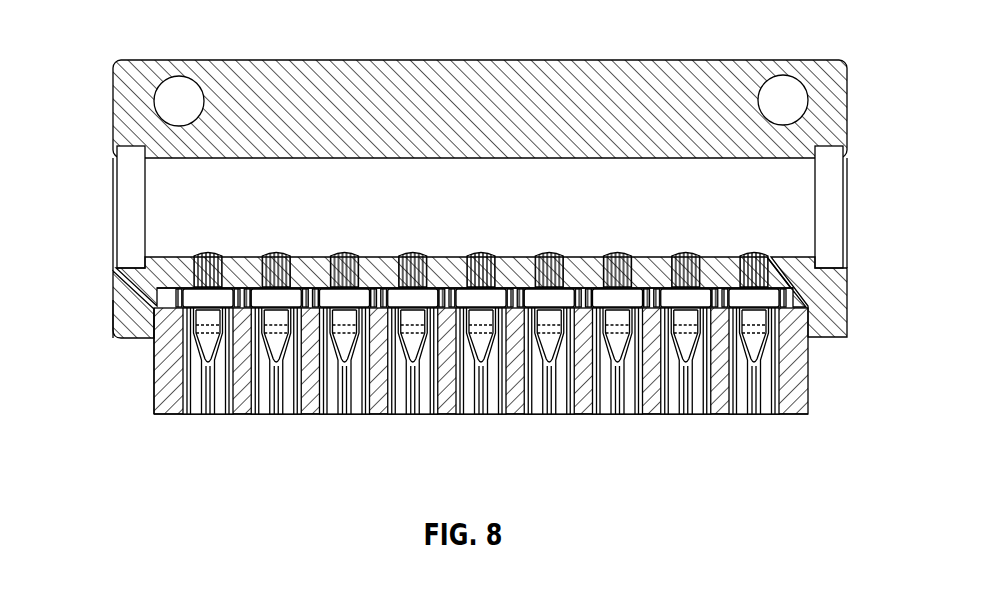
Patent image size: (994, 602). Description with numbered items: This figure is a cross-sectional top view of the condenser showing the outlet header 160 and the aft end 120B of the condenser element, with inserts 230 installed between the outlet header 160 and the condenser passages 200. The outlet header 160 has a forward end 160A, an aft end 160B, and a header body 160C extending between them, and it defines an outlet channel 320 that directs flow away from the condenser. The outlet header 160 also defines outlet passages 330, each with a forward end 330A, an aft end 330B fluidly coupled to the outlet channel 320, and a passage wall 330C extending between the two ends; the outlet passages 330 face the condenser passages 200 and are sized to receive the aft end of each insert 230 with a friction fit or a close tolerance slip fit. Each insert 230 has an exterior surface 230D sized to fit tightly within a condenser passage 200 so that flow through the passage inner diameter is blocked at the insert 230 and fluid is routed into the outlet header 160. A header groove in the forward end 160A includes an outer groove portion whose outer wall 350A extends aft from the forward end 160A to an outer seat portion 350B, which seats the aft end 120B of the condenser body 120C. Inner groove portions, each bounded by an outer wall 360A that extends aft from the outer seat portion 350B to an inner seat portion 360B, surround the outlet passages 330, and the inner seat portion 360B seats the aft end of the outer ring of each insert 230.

The outlet header 160 is at (653, 70).
The forward end 160A is at (116, 332).
The aft end 160B is at (125, 112).
The header body 160C is at (115, 299).
The outlet channel 320 is at (131, 197).
The outlet passages 330 is at (482, 236).
The forward end 330A is at (772, 285).
The aft end 330B is at (762, 254).
The passage wall 330C is at (788, 257).
The outer wall 360A is at (421, 249).
The inner seat portion 360B is at (518, 278).
The outer wall 350A is at (153, 340).
The outer seat portion 350B is at (120, 293).
The insert 230 is at (528, 315).
The exterior surface 230D is at (640, 306).
The condenser passages 200 is at (283, 410).
The aft end 120B is at (850, 337).
The condenser body 120C is at (378, 412).